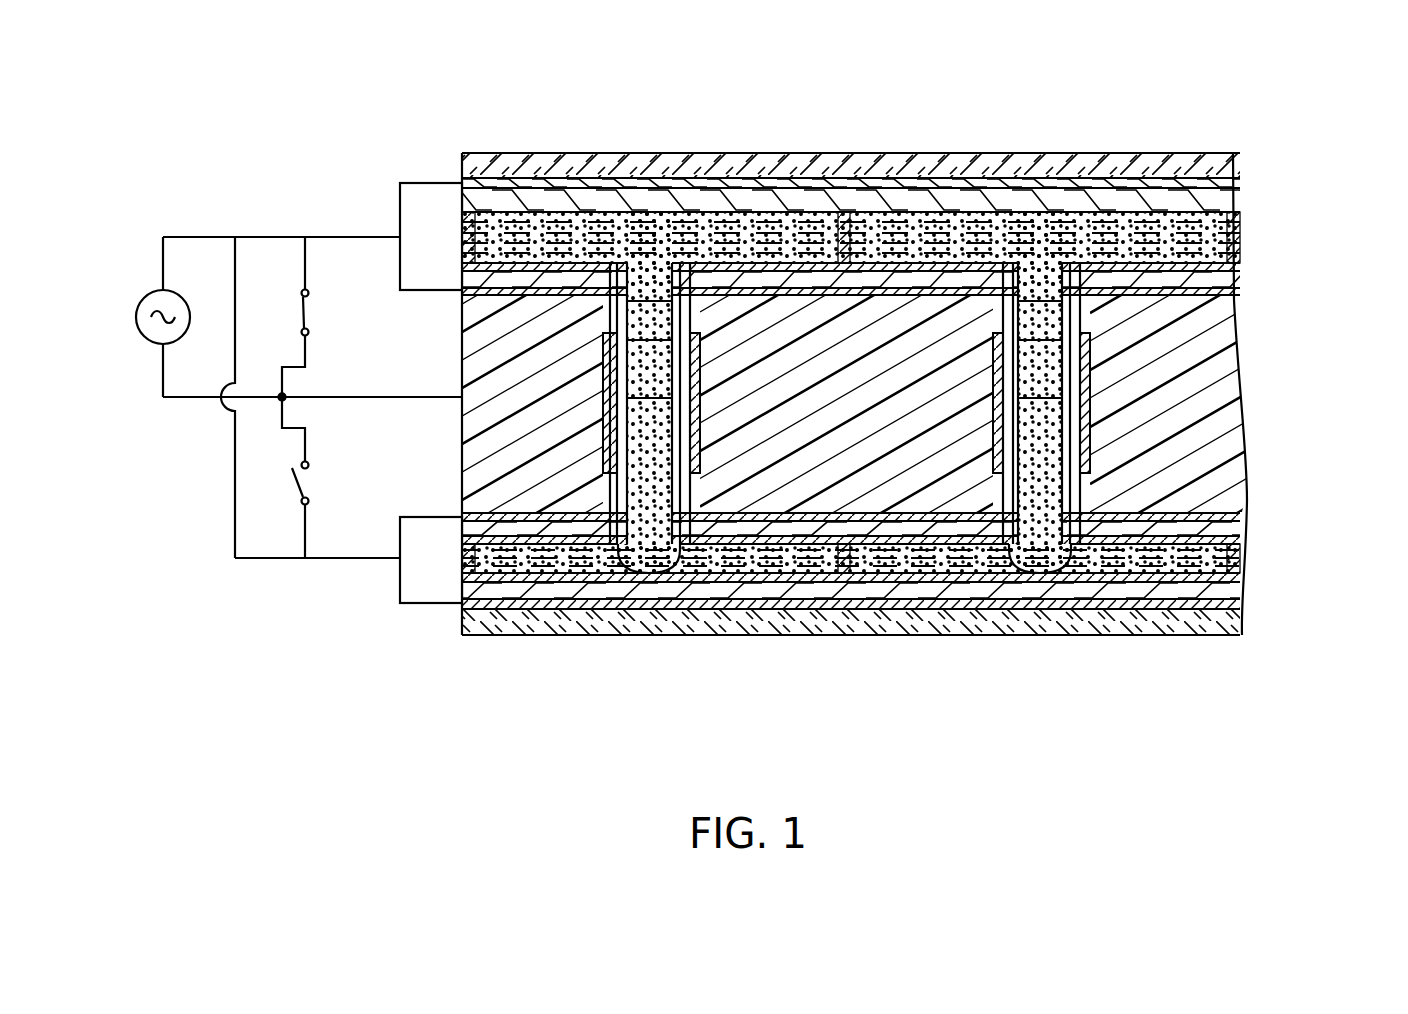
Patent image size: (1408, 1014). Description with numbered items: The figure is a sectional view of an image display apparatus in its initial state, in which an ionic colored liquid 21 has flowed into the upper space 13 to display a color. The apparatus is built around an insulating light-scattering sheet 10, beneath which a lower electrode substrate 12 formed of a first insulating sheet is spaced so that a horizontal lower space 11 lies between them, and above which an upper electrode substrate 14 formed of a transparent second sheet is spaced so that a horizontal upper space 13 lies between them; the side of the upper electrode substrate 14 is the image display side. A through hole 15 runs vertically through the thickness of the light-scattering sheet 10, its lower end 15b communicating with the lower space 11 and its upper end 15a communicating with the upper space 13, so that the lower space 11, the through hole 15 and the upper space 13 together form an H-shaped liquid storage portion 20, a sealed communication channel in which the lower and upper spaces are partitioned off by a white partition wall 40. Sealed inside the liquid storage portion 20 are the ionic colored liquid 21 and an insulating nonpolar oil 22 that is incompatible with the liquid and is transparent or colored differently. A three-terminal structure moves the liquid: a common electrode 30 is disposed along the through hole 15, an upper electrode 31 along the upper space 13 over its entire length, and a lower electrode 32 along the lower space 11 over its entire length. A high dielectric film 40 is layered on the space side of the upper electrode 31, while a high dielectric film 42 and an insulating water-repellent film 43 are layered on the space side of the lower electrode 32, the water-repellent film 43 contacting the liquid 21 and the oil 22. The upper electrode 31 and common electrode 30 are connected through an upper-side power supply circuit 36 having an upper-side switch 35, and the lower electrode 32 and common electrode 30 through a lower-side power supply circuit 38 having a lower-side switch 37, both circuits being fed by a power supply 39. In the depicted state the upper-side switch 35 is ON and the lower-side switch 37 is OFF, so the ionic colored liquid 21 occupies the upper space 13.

The light-scattering sheet 10 is at (1200, 582).
The lower space 11 is at (1253, 578).
The lower electrode substrate 12 is at (972, 612).
The upper space 13 is at (1245, 213).
The upper electrode substrate 14 is at (1200, 172).
The through hole 15 is at (645, 343).
The upper end 15a is at (628, 297).
The lower end 15b is at (636, 575).
The liquid storage portion 20 is at (1340, 250).
The ionic colored liquid 21 is at (507, 235).
The oil 22 is at (563, 565).
The common electrode 30 is at (605, 380).
The upper electrode 31 is at (1143, 288).
The lower electrode 32 is at (1118, 545).
The upper-side switch 35 is at (315, 318).
The upper-side power supply circuit 36 is at (268, 237).
The lower-side switch 37 is at (315, 478).
The lower-side power supply circuit 38 is at (338, 558).
The power supply 39 is at (136, 317).
The high dielectric film 40 is at (850, 207).
The high dielectric film 42 is at (497, 528).
The water-repellent film 43 is at (727, 583).